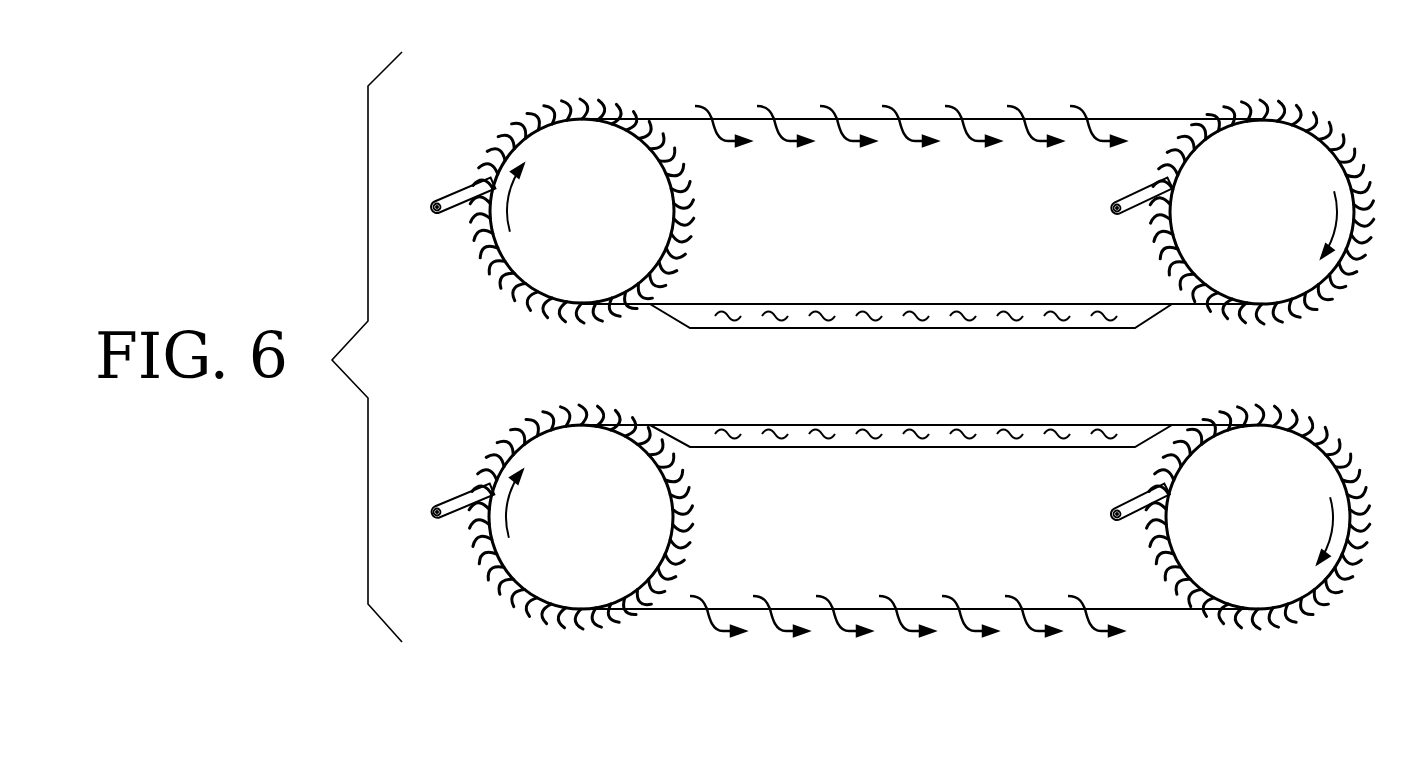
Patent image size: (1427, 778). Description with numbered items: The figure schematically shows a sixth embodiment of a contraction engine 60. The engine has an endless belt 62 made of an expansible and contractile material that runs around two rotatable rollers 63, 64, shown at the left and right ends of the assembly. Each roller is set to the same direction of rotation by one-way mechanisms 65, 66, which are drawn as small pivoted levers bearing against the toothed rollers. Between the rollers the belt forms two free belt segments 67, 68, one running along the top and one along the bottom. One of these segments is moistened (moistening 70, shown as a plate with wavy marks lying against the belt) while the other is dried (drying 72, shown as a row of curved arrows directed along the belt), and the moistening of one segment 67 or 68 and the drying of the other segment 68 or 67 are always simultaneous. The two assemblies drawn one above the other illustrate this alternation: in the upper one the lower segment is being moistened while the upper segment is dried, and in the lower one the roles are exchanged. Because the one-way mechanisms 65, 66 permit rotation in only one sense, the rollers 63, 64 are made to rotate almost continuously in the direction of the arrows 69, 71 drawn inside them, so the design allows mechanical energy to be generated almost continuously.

The contraction engine 60 is at (1210, 88).
The endless belt 62 is at (921, 372).
The rotatable roller 63 is at (518, 263).
The rotatable roller 64 is at (1312, 282).
The one-way mechanism 65 is at (452, 190).
The one-way mechanism 66 is at (1125, 193).
The free belt segment 67 is at (803, 117).
The free belt segment 68 is at (898, 304).
The arrow 69 is at (505, 210).
The moistening 70 is at (783, 320).
The arrow 71 is at (1338, 227).
The drying 72 is at (907, 125).